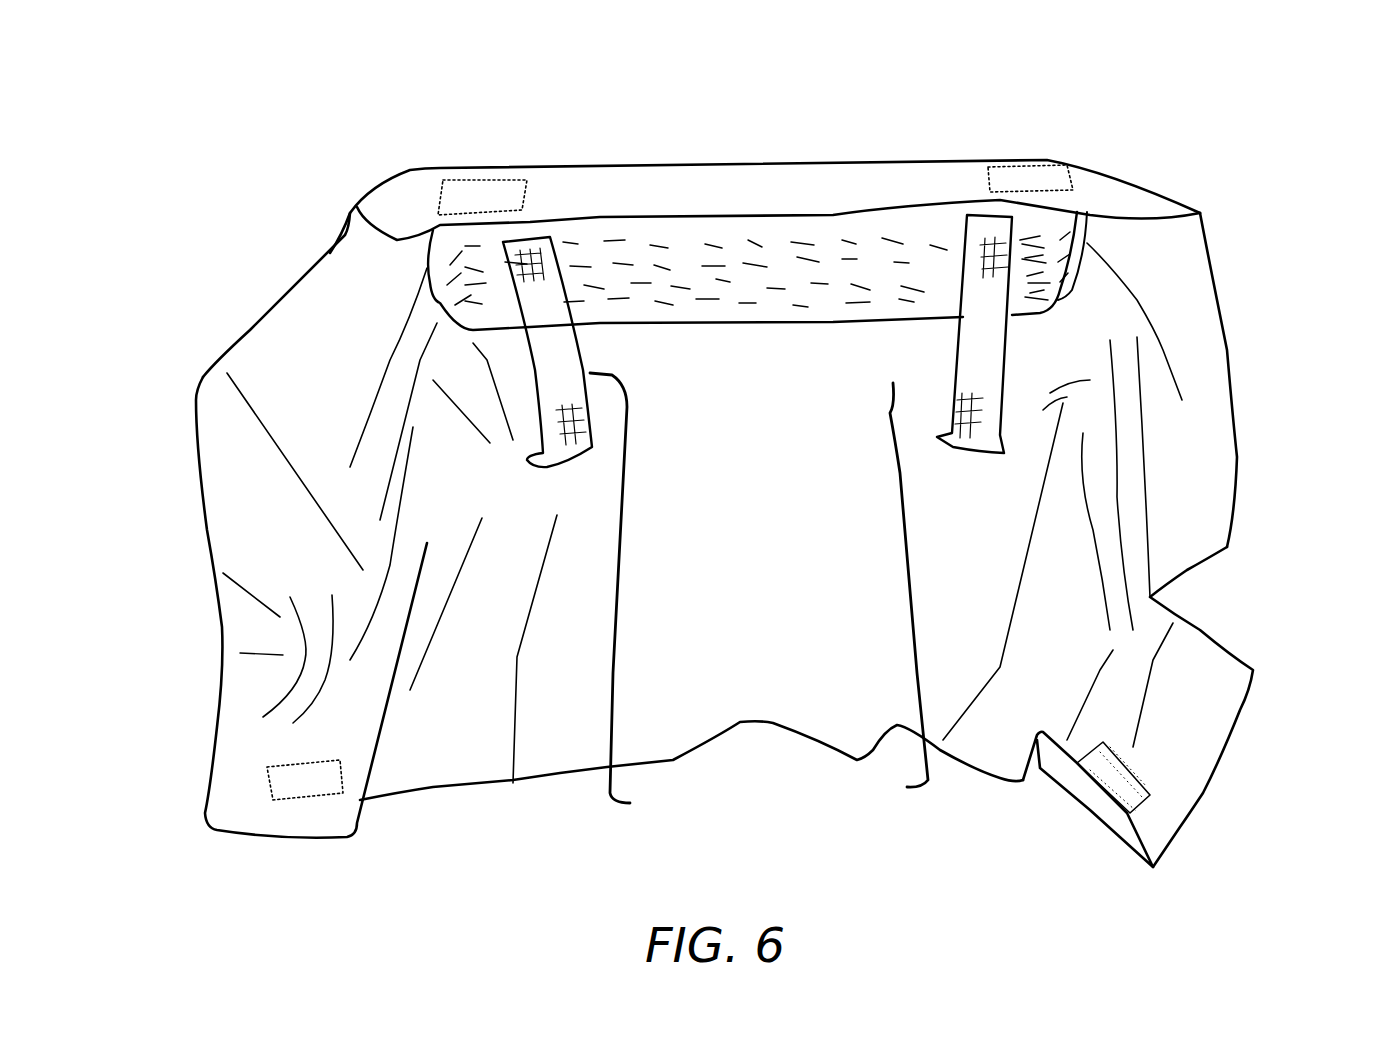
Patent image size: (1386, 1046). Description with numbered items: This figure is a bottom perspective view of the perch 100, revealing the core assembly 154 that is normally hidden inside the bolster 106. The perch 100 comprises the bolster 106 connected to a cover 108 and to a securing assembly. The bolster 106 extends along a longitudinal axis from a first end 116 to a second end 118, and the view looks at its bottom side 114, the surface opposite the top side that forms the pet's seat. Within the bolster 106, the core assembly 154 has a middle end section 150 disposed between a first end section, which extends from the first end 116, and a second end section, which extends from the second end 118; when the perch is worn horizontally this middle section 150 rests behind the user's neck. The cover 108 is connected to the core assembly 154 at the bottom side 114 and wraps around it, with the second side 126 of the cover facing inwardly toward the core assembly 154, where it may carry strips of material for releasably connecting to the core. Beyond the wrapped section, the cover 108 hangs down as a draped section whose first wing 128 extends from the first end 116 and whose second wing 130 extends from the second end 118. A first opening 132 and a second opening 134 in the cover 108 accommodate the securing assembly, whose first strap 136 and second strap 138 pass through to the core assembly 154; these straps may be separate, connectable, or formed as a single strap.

The perch 100 is at (1231, 868).
The bolster 106 is at (308, 156).
The cover 108 is at (404, 828).
The bottom side 114 is at (1043, 228).
The first end 116 is at (1160, 273).
The second end 118 is at (378, 274).
The second side 126 is at (730, 657).
The first wing 128 is at (1240, 603).
The second wing 130 is at (213, 537).
The first opening 132 is at (995, 430).
The second opening 134 is at (520, 447).
The first strap 136 is at (895, 593).
The second strap 138 is at (636, 597).
The middle end section 150 is at (767, 163).
The core assembly 154 is at (853, 237).